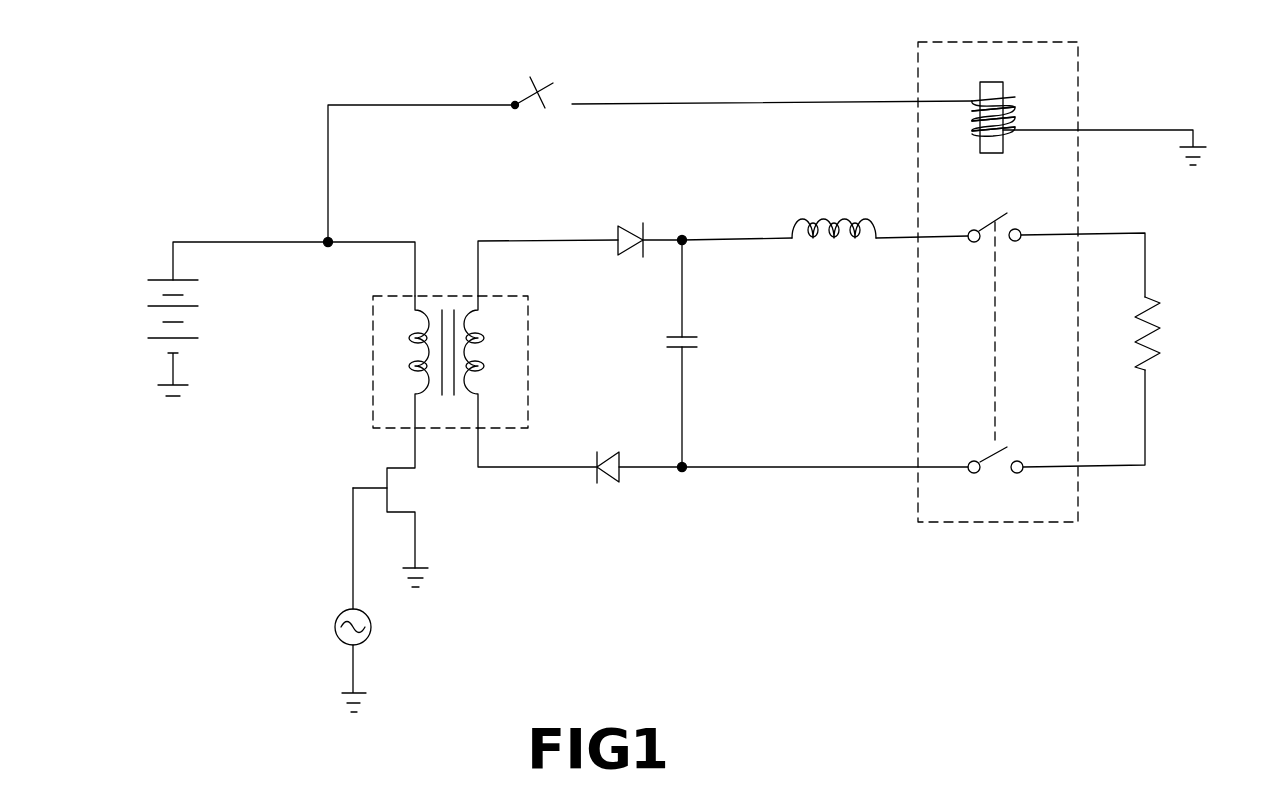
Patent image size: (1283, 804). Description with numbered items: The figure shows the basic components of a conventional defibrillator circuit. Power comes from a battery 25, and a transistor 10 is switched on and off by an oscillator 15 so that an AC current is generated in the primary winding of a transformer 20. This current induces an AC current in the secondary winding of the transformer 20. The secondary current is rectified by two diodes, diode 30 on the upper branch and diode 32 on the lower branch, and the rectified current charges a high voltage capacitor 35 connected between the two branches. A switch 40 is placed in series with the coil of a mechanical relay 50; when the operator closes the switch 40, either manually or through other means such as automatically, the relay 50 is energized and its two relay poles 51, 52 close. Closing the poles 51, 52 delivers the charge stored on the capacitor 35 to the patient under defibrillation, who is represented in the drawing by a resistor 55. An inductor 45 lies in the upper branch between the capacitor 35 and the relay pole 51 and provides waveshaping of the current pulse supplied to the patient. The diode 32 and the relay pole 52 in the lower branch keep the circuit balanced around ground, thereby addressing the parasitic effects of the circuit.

The transistor 10 is at (417, 483).
The oscillator 15 is at (338, 630).
The transformer 20 is at (373, 370).
The battery 25 is at (148, 280).
The diode 30 is at (620, 223).
The diode 32 is at (610, 482).
The high voltage capacitor 35 is at (668, 337).
The switch 40 is at (525, 82).
The inductor 45 is at (813, 247).
The mechanical relay 50 is at (1078, 42).
The relay pole 51 is at (1000, 221).
The relay pole 52 is at (992, 456).
The resistor 55 is at (1182, 339).